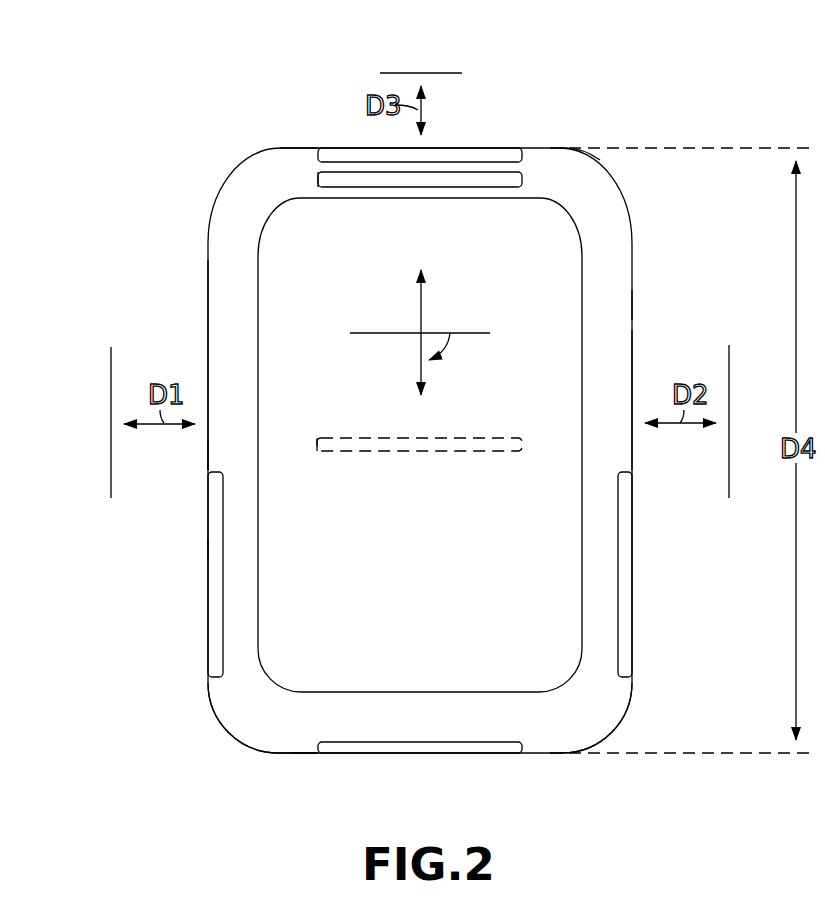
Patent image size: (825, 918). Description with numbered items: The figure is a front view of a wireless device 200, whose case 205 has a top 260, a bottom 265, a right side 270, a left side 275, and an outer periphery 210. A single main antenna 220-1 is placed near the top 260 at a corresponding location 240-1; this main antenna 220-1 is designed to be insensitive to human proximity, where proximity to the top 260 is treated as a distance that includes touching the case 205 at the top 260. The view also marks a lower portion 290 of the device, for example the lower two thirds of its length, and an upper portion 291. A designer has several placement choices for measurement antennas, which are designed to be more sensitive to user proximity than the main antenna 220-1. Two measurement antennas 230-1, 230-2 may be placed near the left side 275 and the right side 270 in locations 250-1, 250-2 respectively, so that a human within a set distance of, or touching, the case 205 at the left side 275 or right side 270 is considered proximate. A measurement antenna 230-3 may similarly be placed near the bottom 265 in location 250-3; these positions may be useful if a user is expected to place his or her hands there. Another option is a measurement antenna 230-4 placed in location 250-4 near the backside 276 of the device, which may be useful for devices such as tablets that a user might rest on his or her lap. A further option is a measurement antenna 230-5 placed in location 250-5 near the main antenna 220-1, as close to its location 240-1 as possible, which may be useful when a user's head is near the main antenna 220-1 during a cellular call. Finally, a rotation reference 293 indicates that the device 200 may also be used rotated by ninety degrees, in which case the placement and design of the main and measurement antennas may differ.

The wireless device 200 is at (716, 66).
The case 205 is at (620, 217).
The outer periphery 210 is at (208, 282).
The main antenna 220-1 is at (464, 150).
The measurement antenna 230-1 is at (213, 663).
The measurement antenna 230-2 is at (625, 643).
The measurement antenna 230-3 is at (444, 748).
The measurement antenna 230-4 is at (455, 448).
The measurement antenna 230-5 is at (442, 178).
The location 240-1 is at (538, 149).
The location 250-1 is at (214, 698).
The location 250-2 is at (623, 691).
The location 250-3 is at (304, 757).
The location 250-4 is at (306, 454).
The location 250-5 is at (308, 179).
The top 260 is at (272, 148).
The bottom 265 is at (280, 755).
The right side 270 is at (633, 302).
The left side 275 is at (207, 450).
The backside 276 is at (184, 551).
The lower portion 290 is at (420, 366).
The upper portion 291 is at (420, 313).
The rotation reference 293 is at (447, 350).